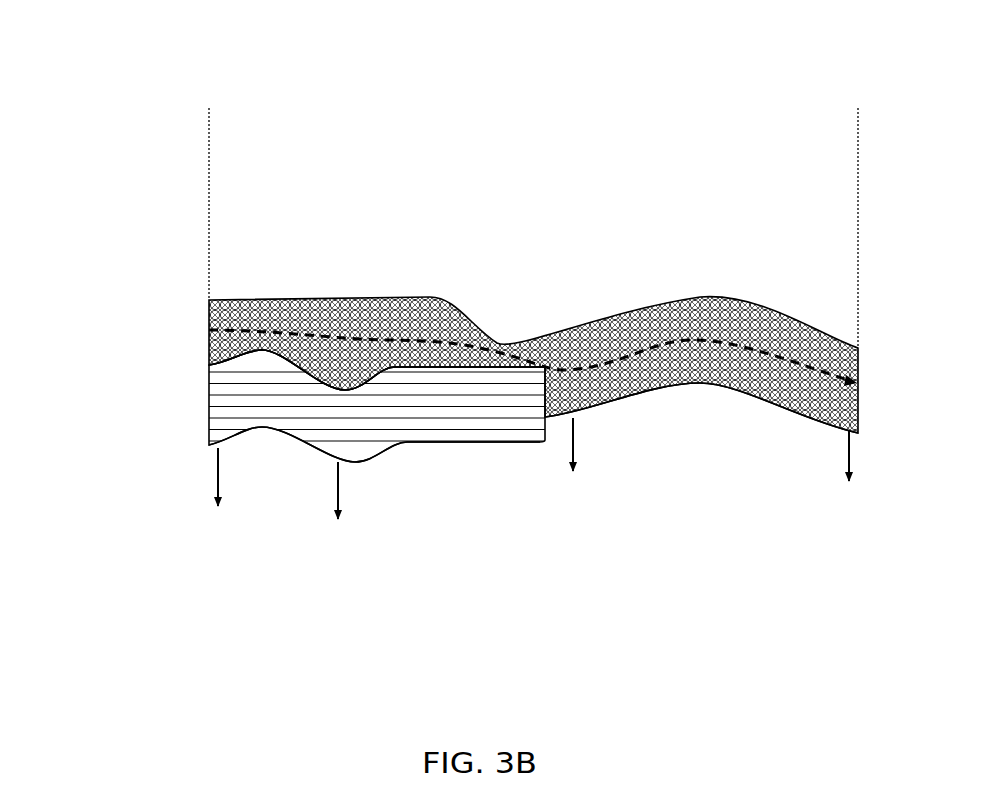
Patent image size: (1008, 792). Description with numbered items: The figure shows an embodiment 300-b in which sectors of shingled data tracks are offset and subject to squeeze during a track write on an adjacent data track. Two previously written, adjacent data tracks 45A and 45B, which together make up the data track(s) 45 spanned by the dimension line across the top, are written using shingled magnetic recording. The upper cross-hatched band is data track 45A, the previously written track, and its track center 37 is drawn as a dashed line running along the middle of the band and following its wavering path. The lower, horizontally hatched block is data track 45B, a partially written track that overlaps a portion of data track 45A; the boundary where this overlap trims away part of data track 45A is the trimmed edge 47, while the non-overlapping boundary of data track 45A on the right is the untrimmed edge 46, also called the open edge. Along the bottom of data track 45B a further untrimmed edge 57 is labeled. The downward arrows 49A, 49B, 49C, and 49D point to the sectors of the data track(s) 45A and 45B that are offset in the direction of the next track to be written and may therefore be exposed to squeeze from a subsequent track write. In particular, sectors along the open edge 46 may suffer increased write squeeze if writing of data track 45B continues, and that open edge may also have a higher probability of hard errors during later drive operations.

The embodiment 300-b is at (782, 43).
The data track(s) 45 is at (856, 161).
The data track 45A is at (212, 337).
The data track 45B is at (212, 402).
The track center 37 is at (592, 365).
The untrimmed edge 46 is at (705, 417).
The trimmed edge 47 is at (470, 367).
The untrimmed edge 57 is at (383, 453).
The arrow 49A is at (218, 485).
The arrow 49B is at (338, 488).
The arrow 49C is at (573, 450).
The arrow 49D is at (849, 462).